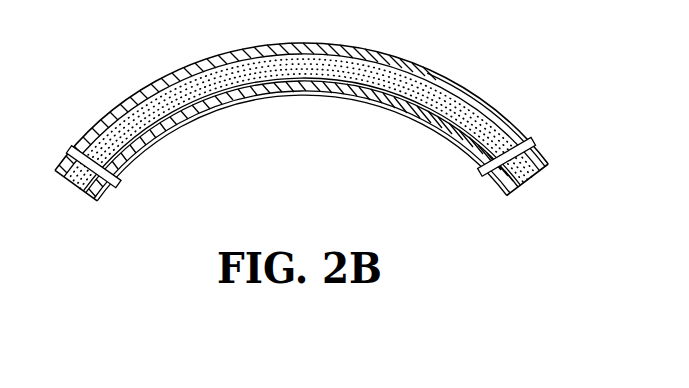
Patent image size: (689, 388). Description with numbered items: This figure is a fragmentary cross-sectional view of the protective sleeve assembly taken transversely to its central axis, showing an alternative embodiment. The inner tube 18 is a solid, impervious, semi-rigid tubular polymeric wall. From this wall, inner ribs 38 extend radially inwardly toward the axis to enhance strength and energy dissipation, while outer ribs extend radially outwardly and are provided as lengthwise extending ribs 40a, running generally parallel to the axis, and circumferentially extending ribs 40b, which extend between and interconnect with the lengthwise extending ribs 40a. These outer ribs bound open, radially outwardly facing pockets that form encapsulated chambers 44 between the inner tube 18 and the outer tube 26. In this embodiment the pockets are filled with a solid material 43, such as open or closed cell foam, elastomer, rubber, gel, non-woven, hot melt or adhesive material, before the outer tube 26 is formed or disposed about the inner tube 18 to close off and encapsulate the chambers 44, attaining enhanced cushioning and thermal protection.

The inner tube 18 is at (357, 97).
The outer tube 26 is at (449, 78).
The inner ribs 38 is at (480, 170).
The lengthwise extending ribs 40a is at (527, 143).
The circumferentially extending ribs 40b is at (267, 72).
The solid material 43 is at (413, 72).
The encapsulated chambers 44 is at (135, 97).